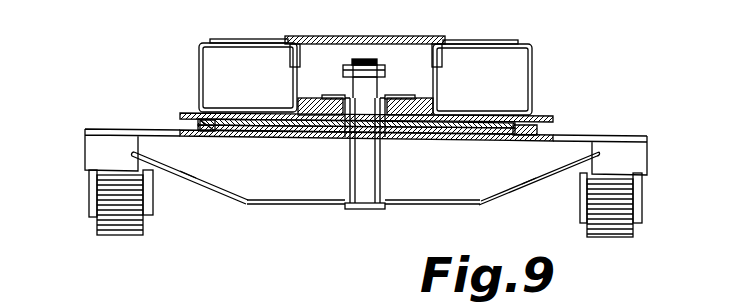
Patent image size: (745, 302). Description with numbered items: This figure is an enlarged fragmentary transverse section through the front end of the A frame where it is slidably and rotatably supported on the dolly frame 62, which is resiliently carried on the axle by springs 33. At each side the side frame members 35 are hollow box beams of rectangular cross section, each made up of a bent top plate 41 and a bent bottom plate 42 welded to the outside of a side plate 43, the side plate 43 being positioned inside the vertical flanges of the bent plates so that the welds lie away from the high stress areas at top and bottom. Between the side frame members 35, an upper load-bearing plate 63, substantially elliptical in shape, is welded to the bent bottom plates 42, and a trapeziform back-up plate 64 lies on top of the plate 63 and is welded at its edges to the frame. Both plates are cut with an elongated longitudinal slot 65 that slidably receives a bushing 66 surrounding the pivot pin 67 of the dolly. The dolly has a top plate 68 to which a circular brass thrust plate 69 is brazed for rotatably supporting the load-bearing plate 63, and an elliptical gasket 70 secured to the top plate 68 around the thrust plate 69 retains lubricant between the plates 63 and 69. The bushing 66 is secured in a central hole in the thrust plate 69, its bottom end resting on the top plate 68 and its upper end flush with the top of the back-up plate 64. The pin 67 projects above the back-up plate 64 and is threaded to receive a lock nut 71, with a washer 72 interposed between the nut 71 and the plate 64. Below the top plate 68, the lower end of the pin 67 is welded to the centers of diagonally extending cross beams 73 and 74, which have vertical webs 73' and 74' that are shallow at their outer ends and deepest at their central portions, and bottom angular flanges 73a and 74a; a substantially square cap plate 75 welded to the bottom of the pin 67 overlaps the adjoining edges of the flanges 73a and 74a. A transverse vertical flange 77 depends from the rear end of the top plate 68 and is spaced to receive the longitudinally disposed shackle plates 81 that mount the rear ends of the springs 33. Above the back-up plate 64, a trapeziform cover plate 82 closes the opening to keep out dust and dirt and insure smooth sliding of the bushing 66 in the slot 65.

The springs 33 is at (120, 230).
The side frame members 35 is at (198, 77).
The bent top plates 41 is at (243, 42).
The bent bottom plates 42 is at (263, 97).
The side plates 43 is at (292, 62).
The dolly frame 62 is at (650, 140).
The upper load-bearing plate 63 is at (553, 117).
The back-up plate 64 is at (312, 97).
The elongated slot 65 is at (397, 97).
The bushing 66 is at (345, 134).
The pivot pin 67 is at (373, 173).
The top plate 68 is at (180, 125).
The thrust plate 69 is at (265, 127).
The gasket 70 is at (553, 137).
The lock nut 71 is at (397, 75).
The washer 72 is at (342, 72).
The cross beam 73 is at (454, 222).
The vertical web 73' is at (539, 178).
The bottom angular flange 73a is at (527, 183).
The cross beam 74 is at (283, 220).
The vertical web 74' is at (189, 176).
The bottom angular flange 74a is at (183, 180).
The cap plate 75 is at (355, 208).
The transverse vertical flange 77 is at (88, 145).
The shackle plates 81 is at (88, 203).
The cover plate 82 is at (295, 38).